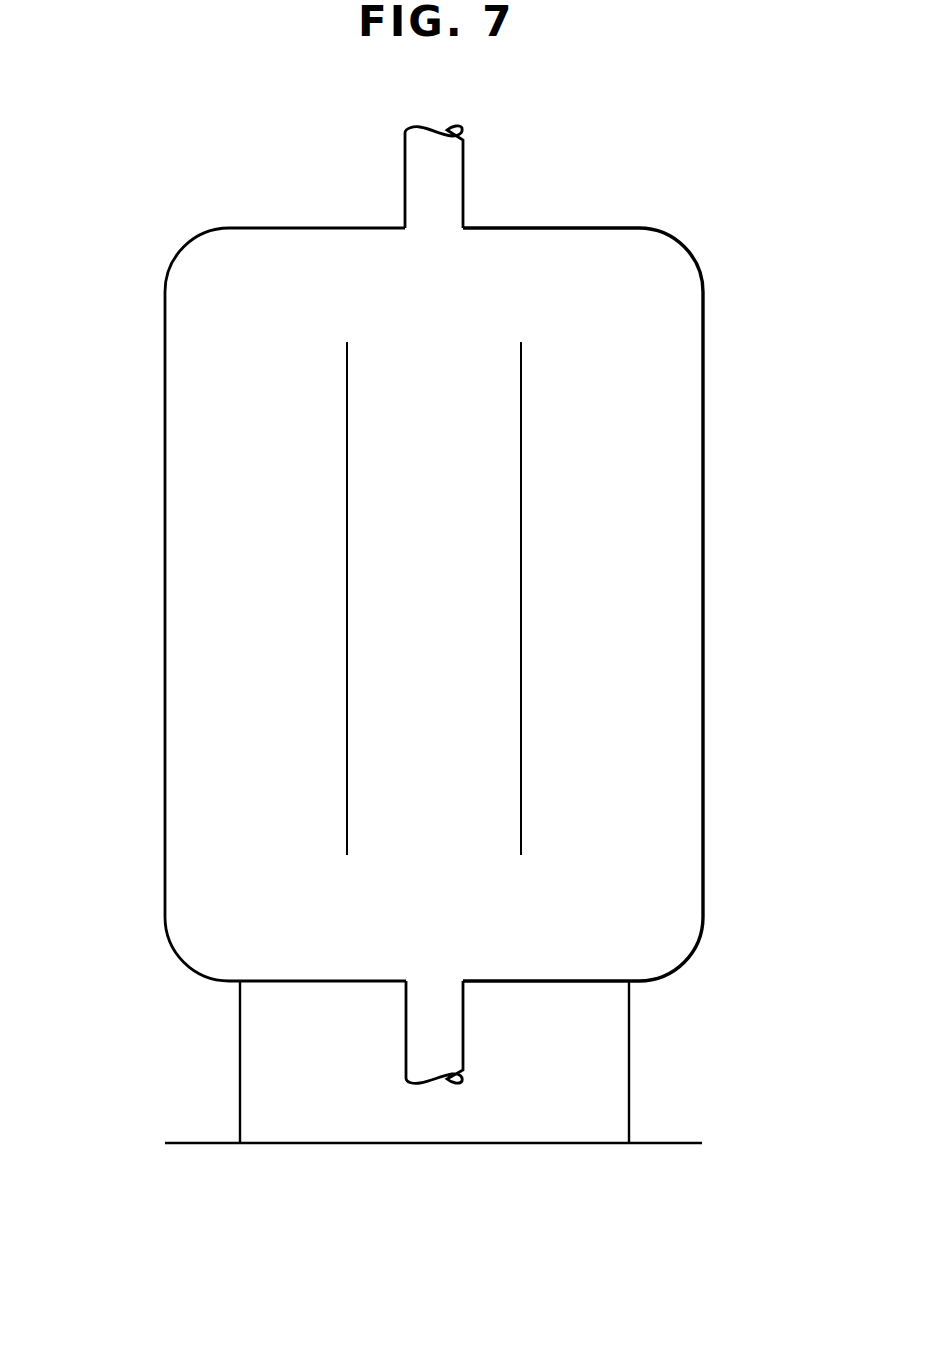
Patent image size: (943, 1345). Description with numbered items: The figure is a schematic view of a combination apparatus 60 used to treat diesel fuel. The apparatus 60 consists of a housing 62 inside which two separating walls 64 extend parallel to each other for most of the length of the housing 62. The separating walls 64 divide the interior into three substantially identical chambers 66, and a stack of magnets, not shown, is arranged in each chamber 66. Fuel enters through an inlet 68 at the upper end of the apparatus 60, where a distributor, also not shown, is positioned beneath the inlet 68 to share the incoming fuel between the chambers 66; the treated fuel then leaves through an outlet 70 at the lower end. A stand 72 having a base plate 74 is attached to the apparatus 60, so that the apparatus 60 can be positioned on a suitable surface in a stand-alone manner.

The combination apparatus 60 is at (735, 375).
The housing 62 is at (703, 467).
The separating walls 64 is at (347, 624).
The chambers 66 is at (198, 758).
The inlet 68 is at (455, 186).
The outlet 70 is at (450, 1032).
The stand 72 is at (613, 1093).
The base plate 74 is at (663, 1143).